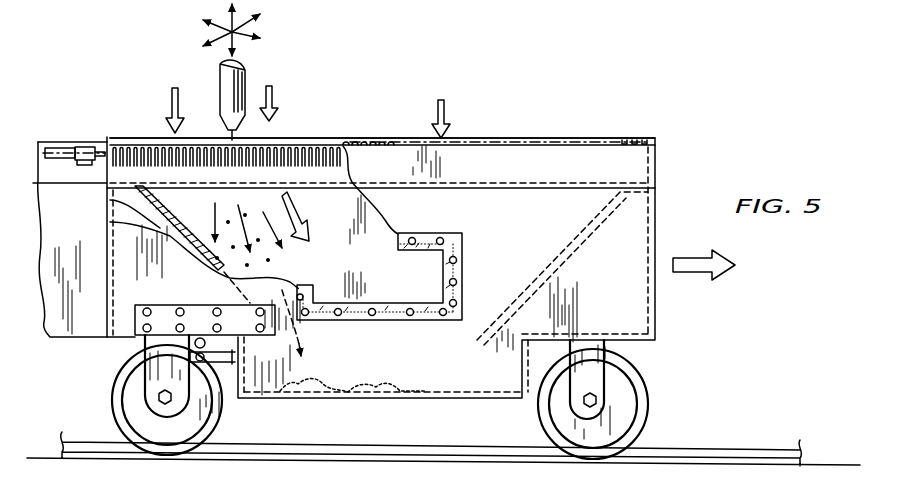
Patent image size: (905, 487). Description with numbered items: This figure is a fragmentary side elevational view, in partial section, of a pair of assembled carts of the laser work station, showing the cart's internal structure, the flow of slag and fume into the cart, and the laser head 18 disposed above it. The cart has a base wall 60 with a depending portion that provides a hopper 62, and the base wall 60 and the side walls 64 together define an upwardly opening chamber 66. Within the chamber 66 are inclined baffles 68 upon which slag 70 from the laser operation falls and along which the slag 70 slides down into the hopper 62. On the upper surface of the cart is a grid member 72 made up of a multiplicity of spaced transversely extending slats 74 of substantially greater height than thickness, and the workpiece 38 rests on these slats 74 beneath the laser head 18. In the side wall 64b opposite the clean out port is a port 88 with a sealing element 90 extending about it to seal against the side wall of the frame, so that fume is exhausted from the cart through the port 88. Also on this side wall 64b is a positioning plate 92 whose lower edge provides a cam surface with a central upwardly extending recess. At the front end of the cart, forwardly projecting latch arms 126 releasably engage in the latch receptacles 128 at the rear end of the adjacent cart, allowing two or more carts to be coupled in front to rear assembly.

The laser head 18 is at (248, 86).
The workpiece 38 is at (506, 139).
The base wall 60 is at (632, 346).
The hopper 62 is at (465, 368).
The side walls 64 is at (657, 298).
The side wall 64b is at (517, 278).
The chamber 66 is at (531, 220).
The inclined baffles 68 is at (108, 222).
The slag 70 is at (315, 388).
The grid member 72 is at (348, 110).
The slats 74 is at (285, 145).
The port 88 is at (416, 286).
The sealing element 90 is at (366, 303).
The positioning plate 92 is at (160, 322).
The latch arms 126 is at (68, 147).
The latch receptacles 128 is at (87, 147).